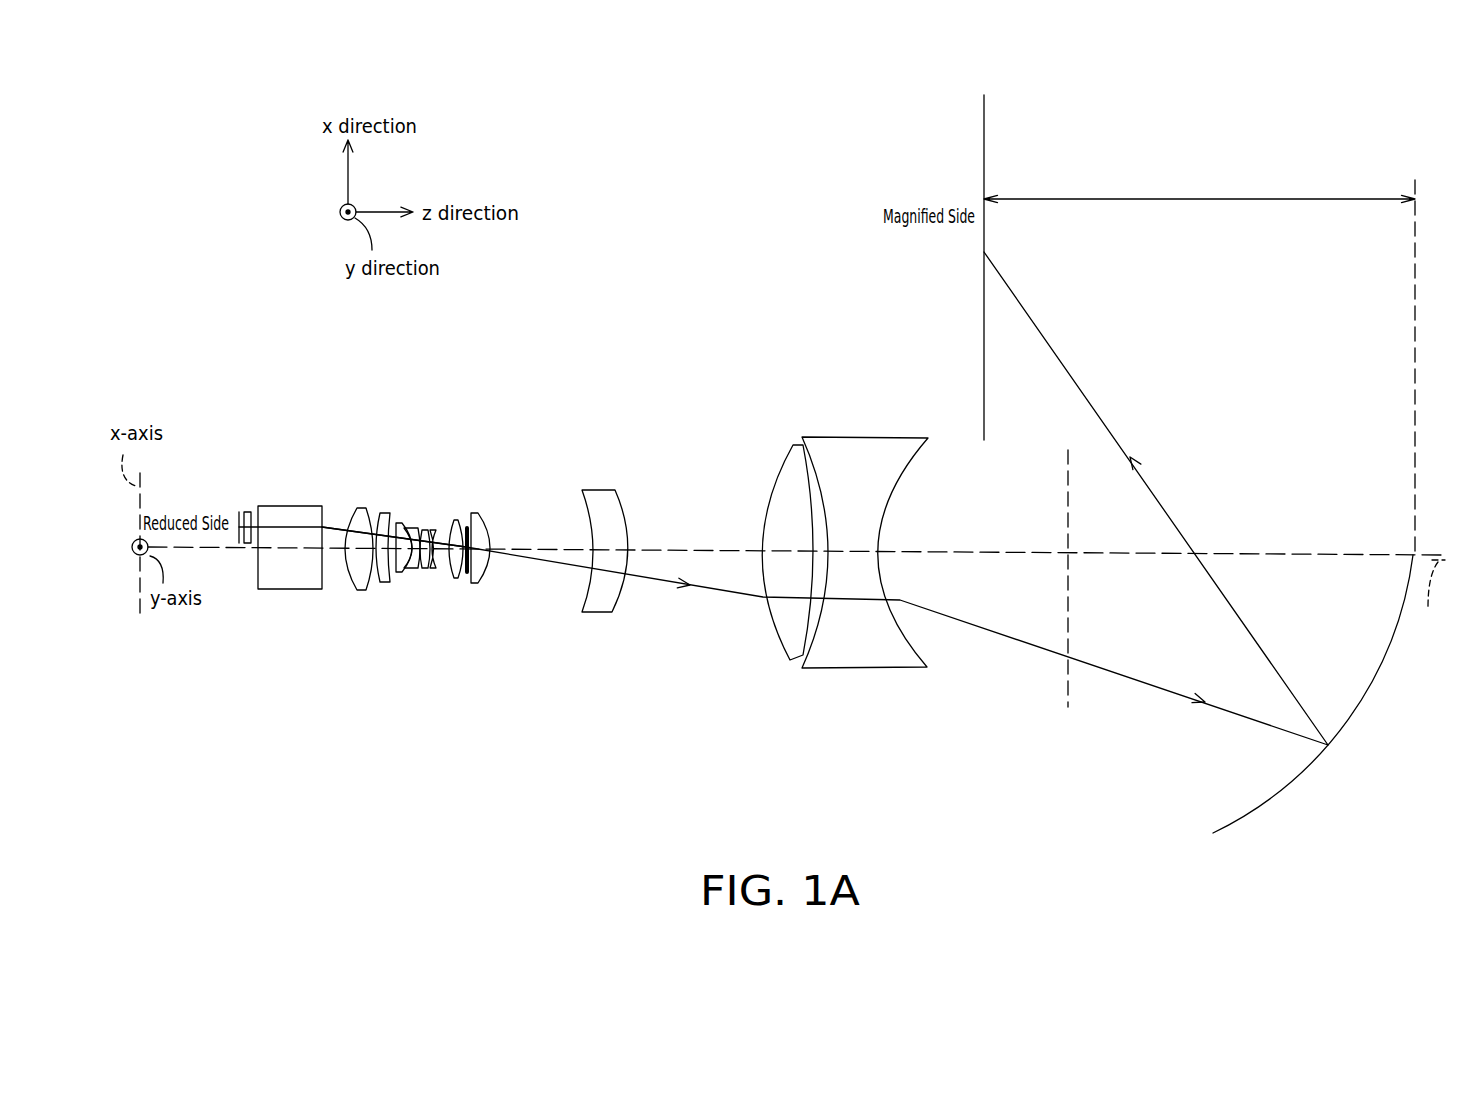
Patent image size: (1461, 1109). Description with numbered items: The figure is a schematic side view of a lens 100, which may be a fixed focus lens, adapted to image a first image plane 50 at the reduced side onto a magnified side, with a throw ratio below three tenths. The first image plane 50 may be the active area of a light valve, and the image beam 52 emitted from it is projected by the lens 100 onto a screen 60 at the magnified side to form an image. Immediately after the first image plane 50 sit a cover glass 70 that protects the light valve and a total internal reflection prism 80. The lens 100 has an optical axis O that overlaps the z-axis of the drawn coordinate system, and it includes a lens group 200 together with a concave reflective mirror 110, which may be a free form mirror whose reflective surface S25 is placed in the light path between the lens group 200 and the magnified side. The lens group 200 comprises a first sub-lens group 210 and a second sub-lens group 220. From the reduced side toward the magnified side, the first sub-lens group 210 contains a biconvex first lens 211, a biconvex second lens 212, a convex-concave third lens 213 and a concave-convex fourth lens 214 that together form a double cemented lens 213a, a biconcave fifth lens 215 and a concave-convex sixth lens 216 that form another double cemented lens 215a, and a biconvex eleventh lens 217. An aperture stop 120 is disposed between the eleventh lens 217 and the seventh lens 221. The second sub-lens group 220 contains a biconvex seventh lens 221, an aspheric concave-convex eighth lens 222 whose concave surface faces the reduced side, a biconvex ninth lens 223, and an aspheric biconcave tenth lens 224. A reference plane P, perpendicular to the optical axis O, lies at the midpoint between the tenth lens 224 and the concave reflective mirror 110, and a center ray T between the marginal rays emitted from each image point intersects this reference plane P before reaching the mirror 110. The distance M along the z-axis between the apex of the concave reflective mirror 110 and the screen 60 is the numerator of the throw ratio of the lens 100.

The first image plane 50 is at (238, 512).
The cover glass 70 is at (247, 512).
The total internal reflection prism 80 is at (288, 517).
The center ray T is at (333, 527).
The lens 100 is at (1350, 921).
The concave reflective mirror 110 is at (1300, 773).
The aperture stop 120 is at (469, 528).
The lens group 200 is at (818, 317).
The first sub-lens group 210 is at (230, 740).
The first lens 211 is at (360, 587).
The second lens 212 is at (387, 585).
The third lens 213 is at (402, 567).
The double cemented lens 213a is at (422, 683).
The fourth lens 214 is at (417, 570).
The fifth lens 215 is at (425, 573).
The double cemented lens 215a is at (533, 683).
The sixth lens 216 is at (437, 572).
The eleventh lens 217 is at (453, 580).
The second sub-lens group 220 is at (737, 345).
The seventh lens 221 is at (480, 535).
The eighth lens 222 is at (603, 503).
The ninth lens 223 is at (783, 493).
The tenth lens 224 is at (855, 457).
The screen 60 is at (983, 163).
The image beam 52 is at (1005, 637).
The distance M is at (1199, 360).
The optical axis O is at (1288, 553).
The reference plane P is at (1063, 613).
The reflective surface S25 is at (1340, 707).